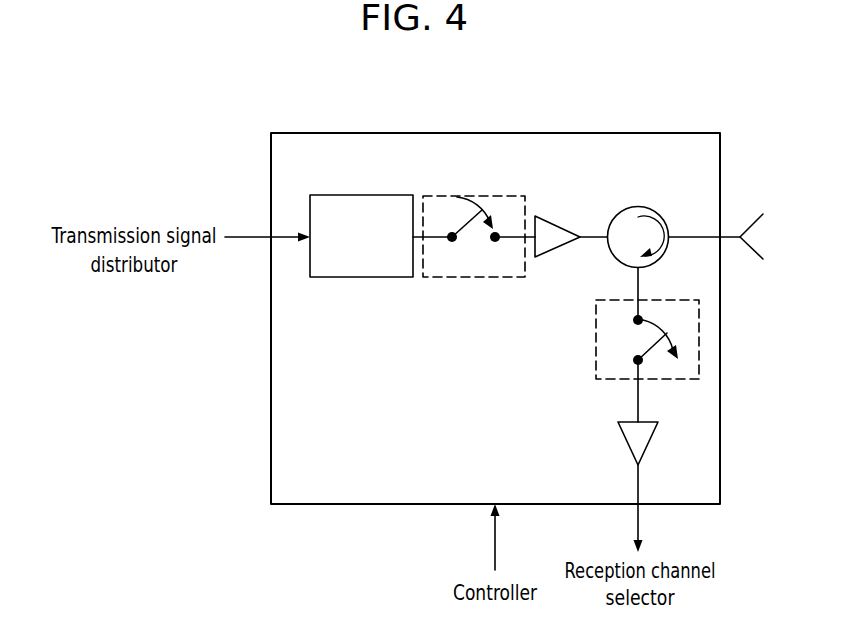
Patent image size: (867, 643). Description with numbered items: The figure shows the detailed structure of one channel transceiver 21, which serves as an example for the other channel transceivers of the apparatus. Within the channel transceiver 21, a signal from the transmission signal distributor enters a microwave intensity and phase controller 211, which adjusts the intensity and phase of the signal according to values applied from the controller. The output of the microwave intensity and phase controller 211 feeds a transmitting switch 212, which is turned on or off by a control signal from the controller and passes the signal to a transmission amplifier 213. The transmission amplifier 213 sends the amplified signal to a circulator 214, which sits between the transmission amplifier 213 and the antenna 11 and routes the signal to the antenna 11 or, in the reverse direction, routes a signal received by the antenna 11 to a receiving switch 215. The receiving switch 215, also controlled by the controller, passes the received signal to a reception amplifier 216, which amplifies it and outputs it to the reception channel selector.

The antenna 11 is at (748, 218).
The channel transceiver 21 is at (493, 133).
The microwave intensity and phase controller 211 is at (360, 195).
The transmitting switch 212 is at (500, 196).
The transmission amplifier 213 is at (558, 224).
The circulator 214 is at (652, 207).
The receiving switch 215 is at (596, 322).
The reception amplifier 216 is at (628, 447).